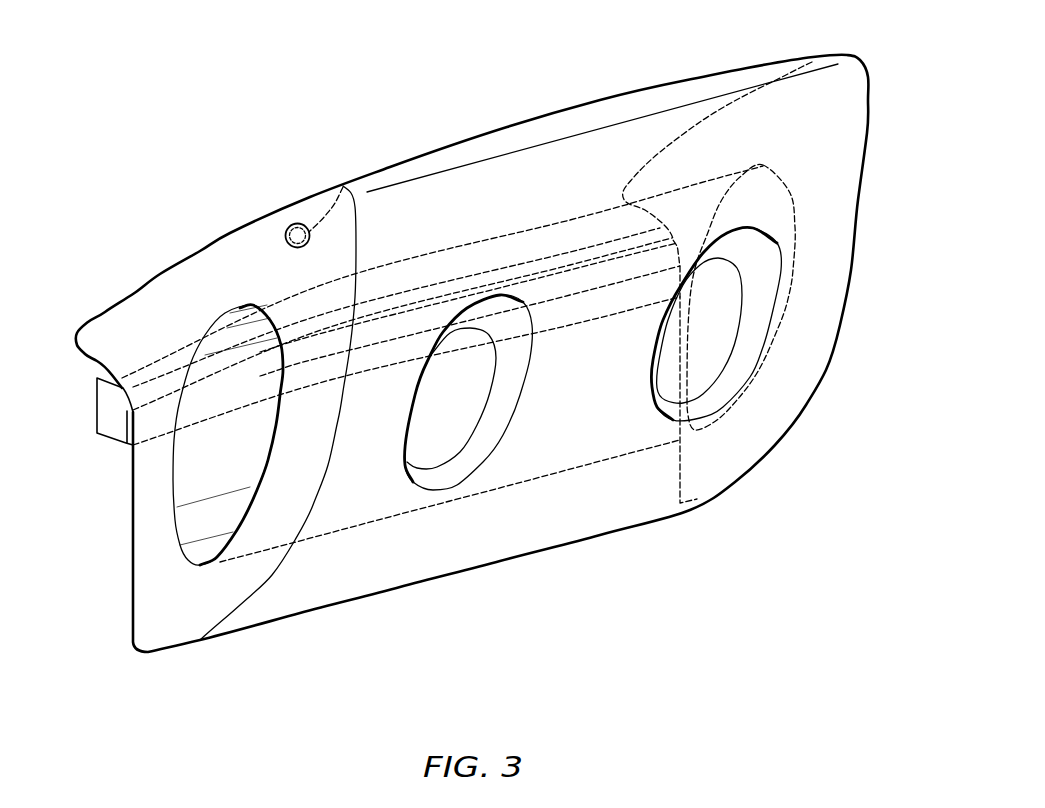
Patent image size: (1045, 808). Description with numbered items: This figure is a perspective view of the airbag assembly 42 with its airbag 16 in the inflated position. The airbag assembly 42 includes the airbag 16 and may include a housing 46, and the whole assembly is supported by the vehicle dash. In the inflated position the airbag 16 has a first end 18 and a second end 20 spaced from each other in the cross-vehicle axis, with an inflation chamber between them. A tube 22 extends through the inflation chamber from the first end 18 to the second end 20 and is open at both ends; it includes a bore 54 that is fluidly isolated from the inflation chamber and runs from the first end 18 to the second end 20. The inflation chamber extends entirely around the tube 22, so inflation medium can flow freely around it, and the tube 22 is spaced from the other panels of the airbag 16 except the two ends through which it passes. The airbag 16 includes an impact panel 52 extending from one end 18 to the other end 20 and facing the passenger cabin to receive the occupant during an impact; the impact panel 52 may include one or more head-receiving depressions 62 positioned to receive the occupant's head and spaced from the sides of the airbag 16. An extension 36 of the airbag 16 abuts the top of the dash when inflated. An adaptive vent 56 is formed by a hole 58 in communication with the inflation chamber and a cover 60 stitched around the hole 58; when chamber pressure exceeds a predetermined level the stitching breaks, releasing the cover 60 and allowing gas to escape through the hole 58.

The airbag 16 is at (833, 127).
The first end 18 is at (187, 294).
The second end 20 is at (840, 322).
The tube 22 is at (187, 554).
The extension 36 is at (93, 333).
The airbag assembly 42 is at (537, 90).
The housing 46 is at (96, 407).
The impact panel 52 is at (578, 395).
The bore 54 is at (205, 471).
The adaptive vent 56 is at (278, 248).
The hole 58 is at (343, 187).
The cover 60 is at (293, 224).
The head-receiving depressions 62 is at (440, 437).